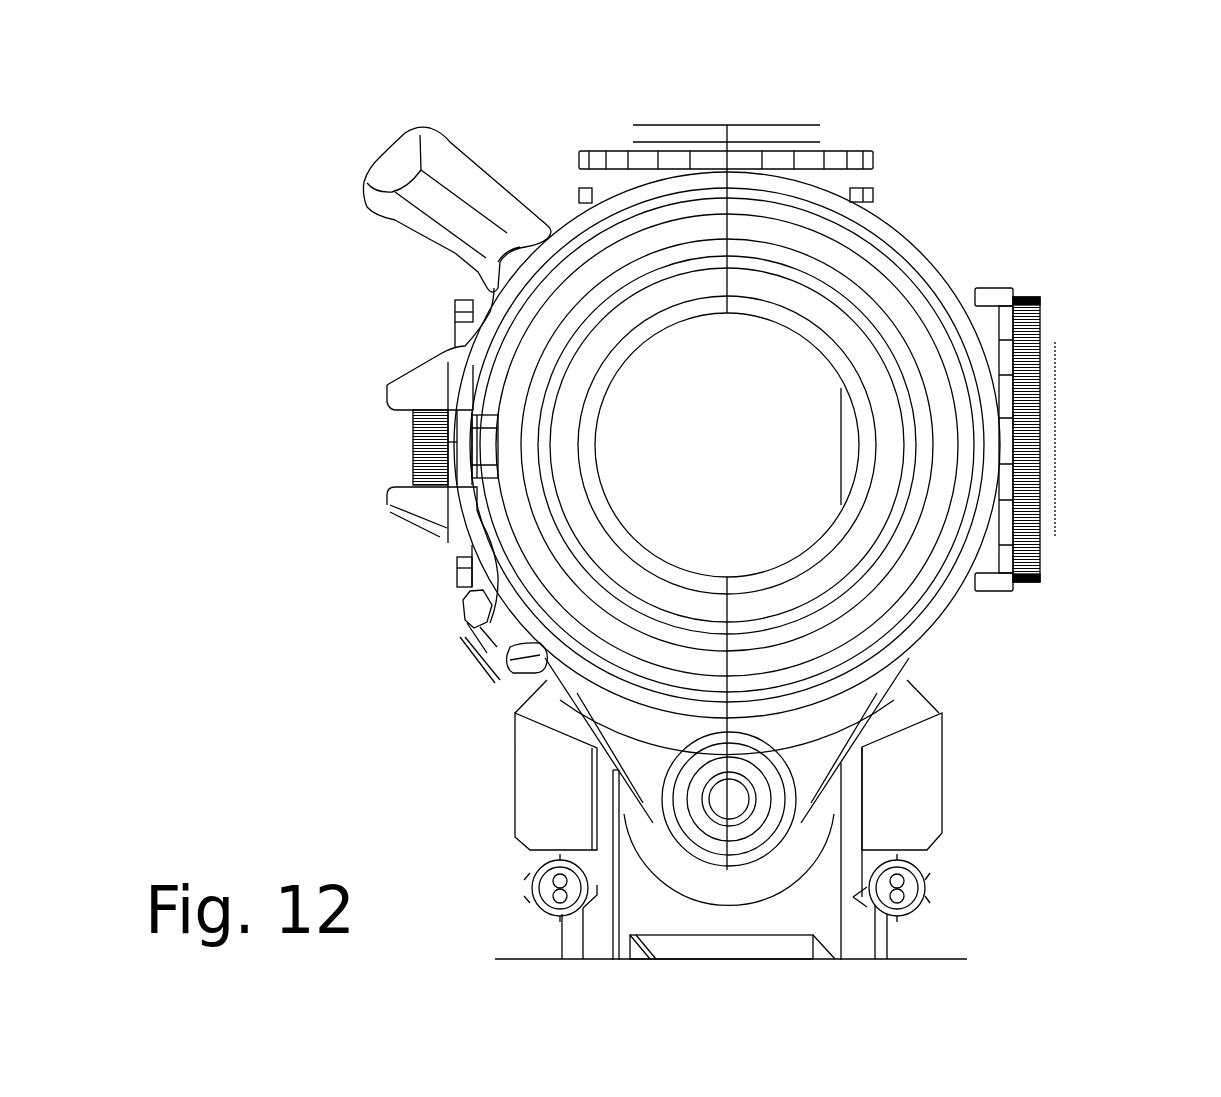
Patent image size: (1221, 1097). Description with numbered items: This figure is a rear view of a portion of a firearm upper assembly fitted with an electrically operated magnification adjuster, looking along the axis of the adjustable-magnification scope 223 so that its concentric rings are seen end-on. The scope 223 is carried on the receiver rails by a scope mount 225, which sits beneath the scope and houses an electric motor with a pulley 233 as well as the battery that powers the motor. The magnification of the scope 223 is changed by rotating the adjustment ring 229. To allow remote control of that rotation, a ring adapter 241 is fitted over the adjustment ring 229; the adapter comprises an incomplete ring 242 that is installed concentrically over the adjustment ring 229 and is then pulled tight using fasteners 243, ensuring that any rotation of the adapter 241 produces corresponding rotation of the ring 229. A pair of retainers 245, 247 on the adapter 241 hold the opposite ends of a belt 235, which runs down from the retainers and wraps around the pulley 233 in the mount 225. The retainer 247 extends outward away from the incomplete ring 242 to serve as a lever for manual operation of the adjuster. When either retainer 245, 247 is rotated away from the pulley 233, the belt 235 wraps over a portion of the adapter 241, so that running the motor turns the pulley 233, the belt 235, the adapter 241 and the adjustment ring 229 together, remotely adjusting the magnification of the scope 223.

The adjustable-magnification scope 223 is at (1035, 292).
The scope mount 225 is at (945, 765).
The adjustment ring 229 is at (865, 272).
The pulley 233 is at (783, 840).
The belt 235 is at (910, 700).
The ring adapter 241 is at (547, 210).
The incomplete ring 242 is at (447, 520).
The fasteners 243 is at (413, 442).
The retainer 245 is at (488, 662).
The retainer 247 is at (450, 142).